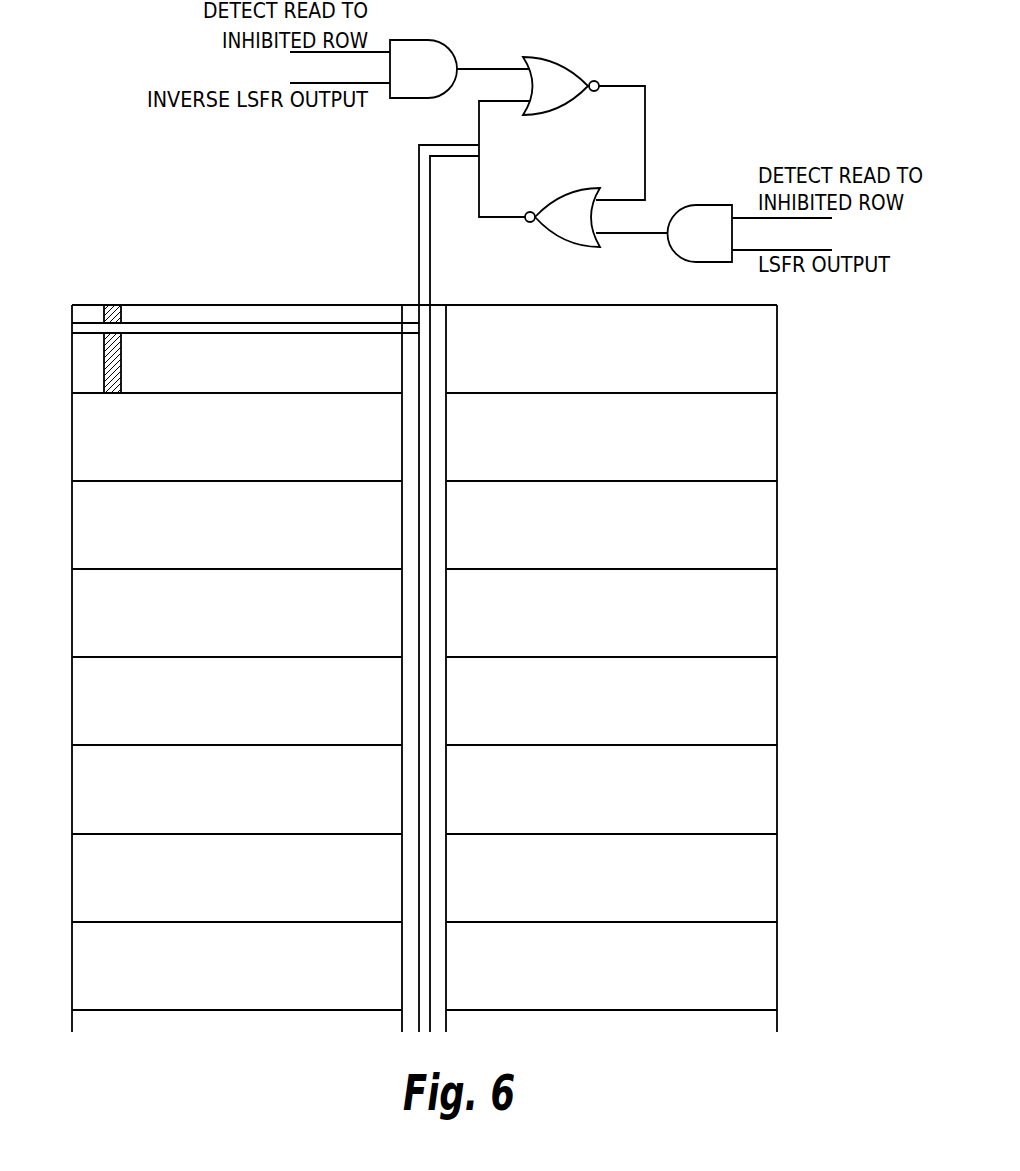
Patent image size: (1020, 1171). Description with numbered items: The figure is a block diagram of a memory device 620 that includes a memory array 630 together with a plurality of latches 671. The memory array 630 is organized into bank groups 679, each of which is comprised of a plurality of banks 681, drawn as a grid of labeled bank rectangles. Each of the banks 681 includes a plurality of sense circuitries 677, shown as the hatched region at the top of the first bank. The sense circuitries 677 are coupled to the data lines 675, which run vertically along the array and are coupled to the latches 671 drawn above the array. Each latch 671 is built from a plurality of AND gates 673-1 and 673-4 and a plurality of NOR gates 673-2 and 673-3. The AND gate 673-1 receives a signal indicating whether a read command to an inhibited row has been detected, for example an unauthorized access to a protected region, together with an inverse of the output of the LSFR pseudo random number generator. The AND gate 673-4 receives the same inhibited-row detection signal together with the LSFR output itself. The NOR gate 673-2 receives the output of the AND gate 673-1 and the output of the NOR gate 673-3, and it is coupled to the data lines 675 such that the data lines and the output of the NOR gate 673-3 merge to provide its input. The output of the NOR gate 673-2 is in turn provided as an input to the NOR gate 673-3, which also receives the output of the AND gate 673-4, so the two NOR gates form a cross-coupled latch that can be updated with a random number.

The memory device 620 is at (391, 602).
The memory array 630 is at (203, 668).
The latches 671 is at (561, 149).
The AND gate 673-1 is at (432, 52).
The NOR gate 673-2 is at (556, 73).
The NOR gate 673-3 is at (565, 228).
The AND gate 673-4 is at (700, 250).
The data lines 675 is at (422, 200).
The sense circuitries 677 is at (112, 305).
The bank groups 679 is at (197, 363).
The banks 681 is at (272, 363).